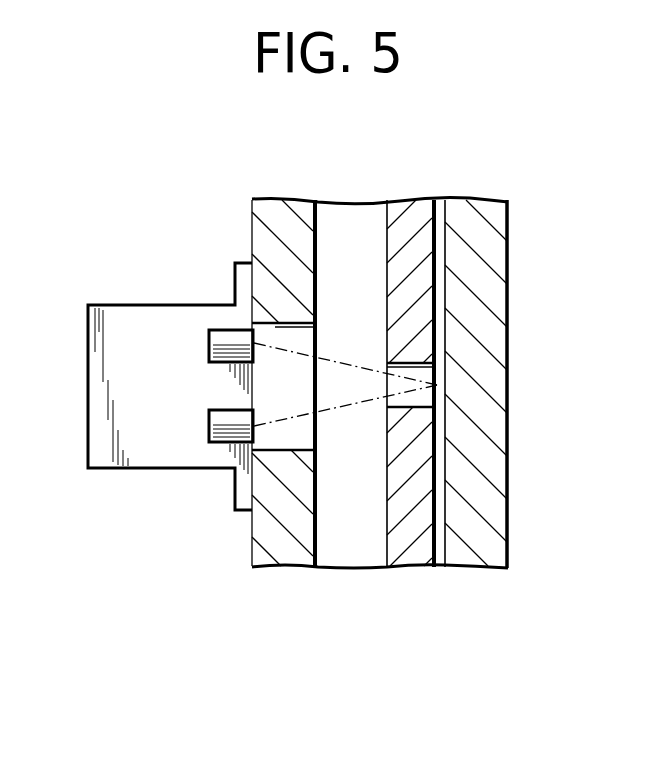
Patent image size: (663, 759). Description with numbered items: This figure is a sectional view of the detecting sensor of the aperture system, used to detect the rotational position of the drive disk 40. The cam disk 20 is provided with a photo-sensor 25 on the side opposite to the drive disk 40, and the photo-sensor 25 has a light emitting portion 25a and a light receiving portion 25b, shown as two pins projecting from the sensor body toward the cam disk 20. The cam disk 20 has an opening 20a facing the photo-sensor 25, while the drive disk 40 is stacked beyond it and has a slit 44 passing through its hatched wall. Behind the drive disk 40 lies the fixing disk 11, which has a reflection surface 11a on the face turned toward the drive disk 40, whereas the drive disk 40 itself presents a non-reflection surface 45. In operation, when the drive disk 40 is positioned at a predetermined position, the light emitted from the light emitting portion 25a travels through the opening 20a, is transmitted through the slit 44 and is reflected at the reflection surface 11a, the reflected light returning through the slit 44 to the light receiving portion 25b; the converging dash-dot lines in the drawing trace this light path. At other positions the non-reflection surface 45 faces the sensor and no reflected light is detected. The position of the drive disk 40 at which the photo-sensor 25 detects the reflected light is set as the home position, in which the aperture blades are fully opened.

The fixing disk 11 is at (493, 290).
The reflection surface 11a is at (440, 232).
The cam disk 20 is at (284, 212).
The opening 20a is at (288, 448).
The photo-sensor 25 is at (88, 388).
The light emitting portion 25a is at (227, 340).
The light receiving portion 25b is at (224, 432).
The drive disk 40 is at (420, 540).
The slit 44 is at (437, 373).
The non-reflection surface 45 is at (387, 525).